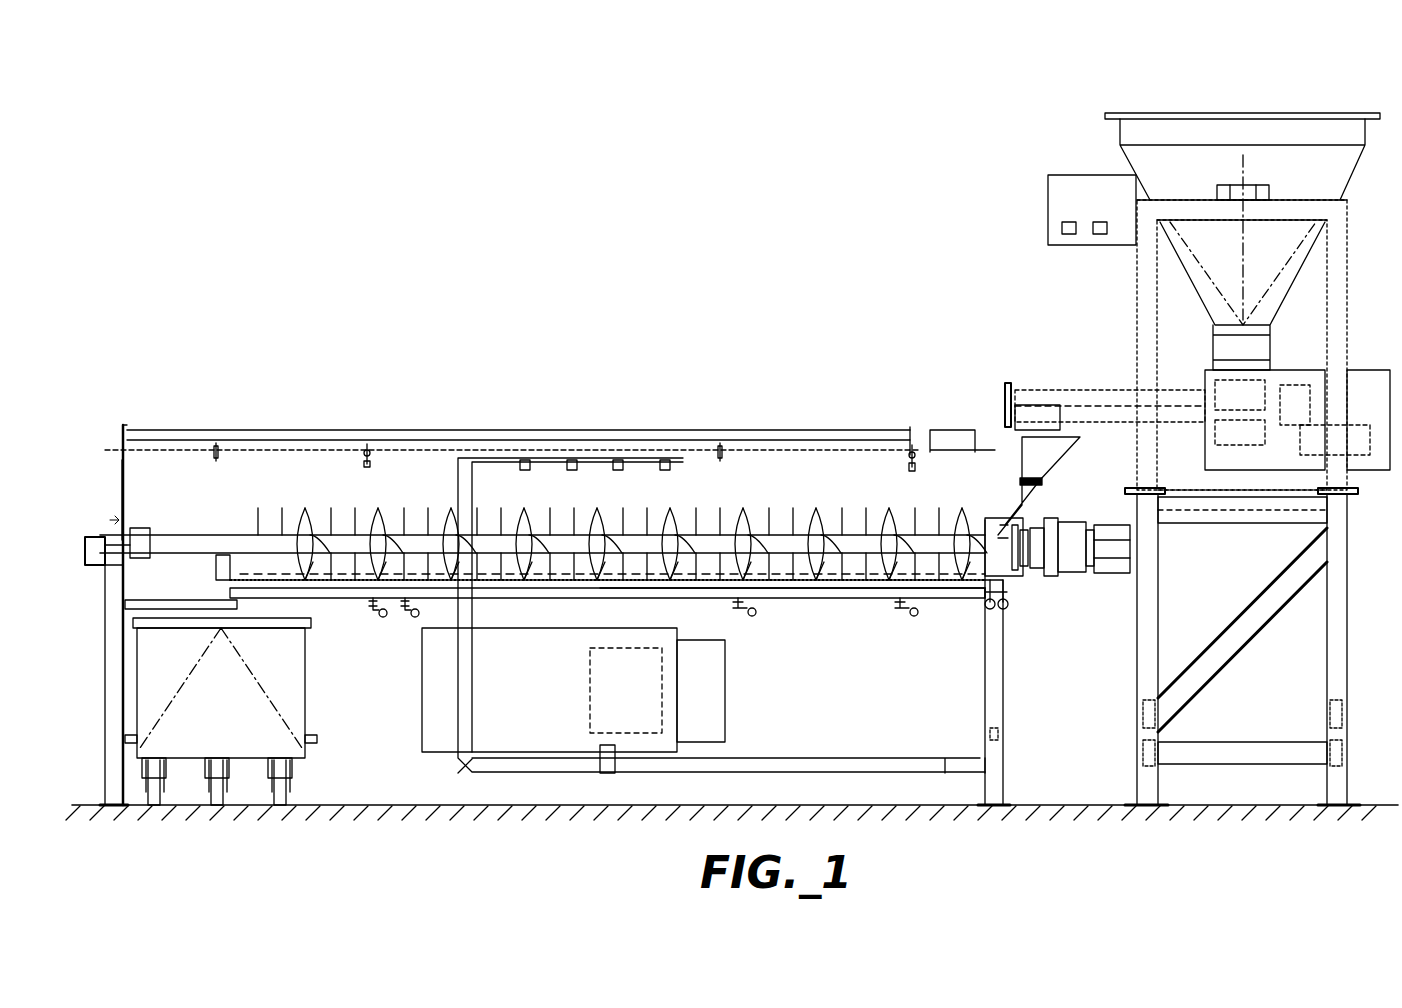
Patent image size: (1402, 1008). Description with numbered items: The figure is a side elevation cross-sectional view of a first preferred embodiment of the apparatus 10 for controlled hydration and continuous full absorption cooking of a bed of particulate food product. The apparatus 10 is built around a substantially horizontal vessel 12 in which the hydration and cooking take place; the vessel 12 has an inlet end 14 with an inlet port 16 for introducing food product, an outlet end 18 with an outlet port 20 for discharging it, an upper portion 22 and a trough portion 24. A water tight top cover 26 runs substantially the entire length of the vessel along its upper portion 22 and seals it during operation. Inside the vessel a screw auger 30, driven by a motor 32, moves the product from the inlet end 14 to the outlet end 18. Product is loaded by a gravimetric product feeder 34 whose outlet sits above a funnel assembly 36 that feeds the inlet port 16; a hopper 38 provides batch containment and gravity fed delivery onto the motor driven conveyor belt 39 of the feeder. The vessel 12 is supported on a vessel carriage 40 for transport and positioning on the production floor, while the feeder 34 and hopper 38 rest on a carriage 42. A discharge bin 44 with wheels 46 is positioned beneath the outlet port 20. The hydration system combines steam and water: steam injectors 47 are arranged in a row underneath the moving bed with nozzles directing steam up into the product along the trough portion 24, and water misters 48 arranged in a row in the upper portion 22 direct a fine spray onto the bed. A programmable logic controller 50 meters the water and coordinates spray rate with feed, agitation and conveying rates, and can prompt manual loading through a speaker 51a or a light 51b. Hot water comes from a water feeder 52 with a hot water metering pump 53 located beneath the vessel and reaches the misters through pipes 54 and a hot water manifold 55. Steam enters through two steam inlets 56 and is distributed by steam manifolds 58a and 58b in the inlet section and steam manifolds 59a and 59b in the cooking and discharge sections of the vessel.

The apparatus 10 is at (845, 305).
The vessel 12 is at (122, 490).
The inlet end 14 is at (1036, 606).
The inlet port 16 is at (1005, 565).
The outlet end 18 is at (122, 497).
The outlet port 20 is at (123, 600).
The upper portion 22 is at (165, 462).
The trough portion 24 is at (160, 513).
The top cover 26 is at (250, 435).
The screw auger 30 is at (790, 545).
The motor 32 is at (1050, 520).
The gravimetric product feeder 34 is at (1042, 392).
The funnel assembly 36 is at (1022, 440).
The hopper 38 is at (1320, 130).
The conveyor belt 39 is at (1105, 395).
The vessel carriage 40 is at (1003, 690).
The carriage 42 is at (1335, 662).
The discharge bin 44 is at (158, 668).
The wheels 46 is at (280, 806).
The steam injector 47 is at (397, 615).
The water mister 48 is at (372, 460).
The programmable logic controller 50 is at (1065, 205).
The speaker 51a is at (1066, 242).
The light 51b is at (1100, 245).
The water feeder 52 is at (505, 640).
The hot water metering pump 53 is at (598, 696).
The pipe 54 is at (463, 718).
The hot water manifold 55 is at (105, 452).
The steam inlet 56 is at (1005, 612).
The steam manifold 58a is at (775, 592).
The steam manifold 58b is at (847, 592).
The steam manifold 59a is at (607, 590).
The steam manifold 59b is at (312, 590).